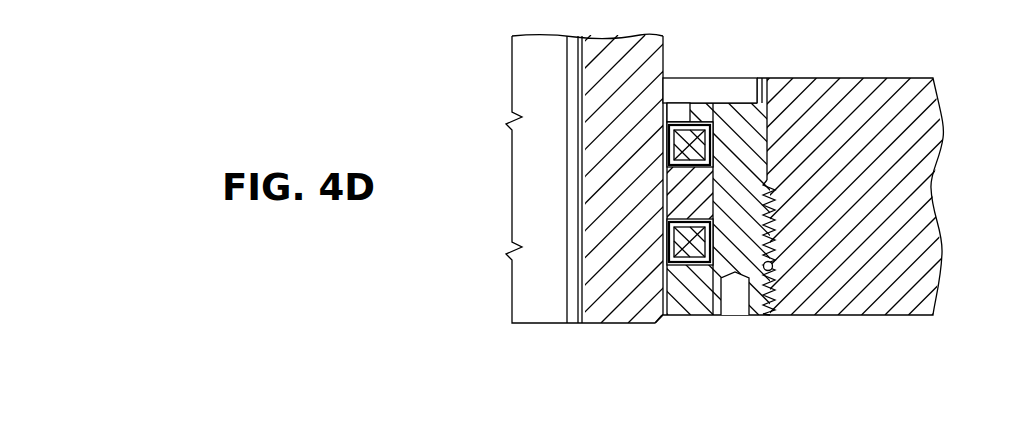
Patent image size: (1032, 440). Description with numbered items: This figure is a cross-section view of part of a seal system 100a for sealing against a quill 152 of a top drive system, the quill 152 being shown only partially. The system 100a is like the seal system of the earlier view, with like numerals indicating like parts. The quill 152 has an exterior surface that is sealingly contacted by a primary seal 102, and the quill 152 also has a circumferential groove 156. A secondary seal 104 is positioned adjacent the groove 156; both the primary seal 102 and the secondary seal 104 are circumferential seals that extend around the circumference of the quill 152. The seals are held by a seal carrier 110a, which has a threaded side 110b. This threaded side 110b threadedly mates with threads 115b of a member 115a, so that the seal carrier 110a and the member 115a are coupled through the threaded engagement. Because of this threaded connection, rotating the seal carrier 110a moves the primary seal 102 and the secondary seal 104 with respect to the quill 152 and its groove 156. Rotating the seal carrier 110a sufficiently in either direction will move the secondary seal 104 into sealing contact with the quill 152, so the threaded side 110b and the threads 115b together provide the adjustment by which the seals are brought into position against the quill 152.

The system 100a is at (737, 93).
The primary seal 102 is at (712, 231).
The secondary seal 104 is at (748, 150).
The seal carrier 110a is at (667, 283).
The threaded side 110b is at (772, 206).
The member 115a is at (887, 87).
The threads 115b is at (772, 272).
The quill 152 is at (620, 227).
The circumferential groove 156 is at (705, 150).